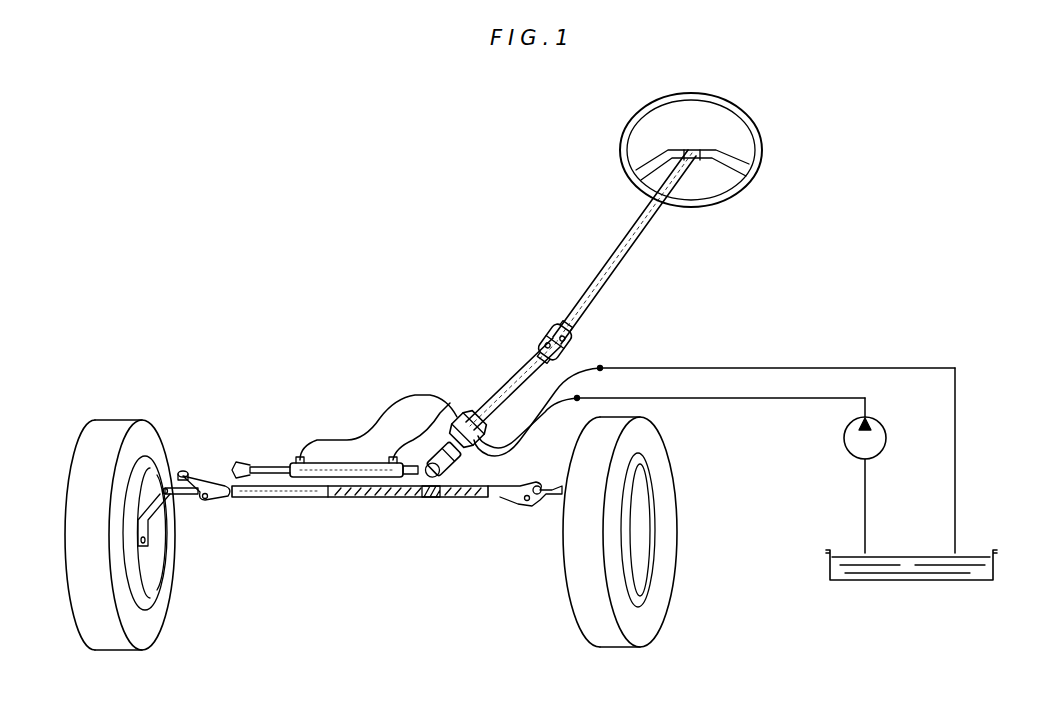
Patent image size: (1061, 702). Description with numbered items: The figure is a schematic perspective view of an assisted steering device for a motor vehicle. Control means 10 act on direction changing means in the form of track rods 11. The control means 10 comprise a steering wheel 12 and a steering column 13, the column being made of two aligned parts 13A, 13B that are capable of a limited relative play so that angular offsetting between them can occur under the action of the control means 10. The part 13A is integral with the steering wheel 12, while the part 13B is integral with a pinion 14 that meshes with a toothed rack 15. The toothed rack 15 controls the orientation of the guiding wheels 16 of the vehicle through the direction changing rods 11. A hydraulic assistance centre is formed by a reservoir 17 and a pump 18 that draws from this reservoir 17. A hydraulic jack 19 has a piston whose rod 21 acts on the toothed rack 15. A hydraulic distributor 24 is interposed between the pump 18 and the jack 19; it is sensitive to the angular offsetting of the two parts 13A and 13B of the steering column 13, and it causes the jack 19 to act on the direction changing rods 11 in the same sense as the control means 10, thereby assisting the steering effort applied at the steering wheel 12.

The control means 10 is at (553, 305).
The track rods 11 is at (200, 478).
The steering wheel 12 is at (758, 125).
The steering column 13 is at (625, 242).
The part of steering column 13A is at (517, 381).
The part of steering column 13B is at (450, 470).
The pinion 14 is at (431, 498).
The toothed rack 15 is at (338, 498).
The guiding wheels 16 is at (72, 456).
The reservoir 17 is at (993, 578).
The pump 18 is at (886, 430).
The hydraulic jack 19 is at (370, 460).
The rod 21 is at (268, 460).
The hydraulic distributor 24 is at (476, 412).